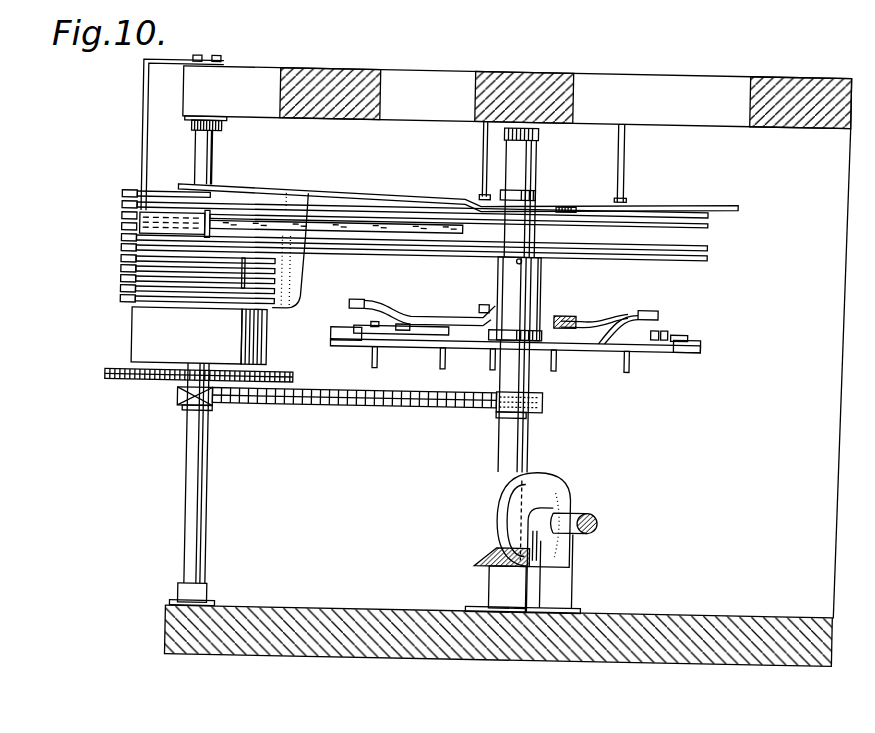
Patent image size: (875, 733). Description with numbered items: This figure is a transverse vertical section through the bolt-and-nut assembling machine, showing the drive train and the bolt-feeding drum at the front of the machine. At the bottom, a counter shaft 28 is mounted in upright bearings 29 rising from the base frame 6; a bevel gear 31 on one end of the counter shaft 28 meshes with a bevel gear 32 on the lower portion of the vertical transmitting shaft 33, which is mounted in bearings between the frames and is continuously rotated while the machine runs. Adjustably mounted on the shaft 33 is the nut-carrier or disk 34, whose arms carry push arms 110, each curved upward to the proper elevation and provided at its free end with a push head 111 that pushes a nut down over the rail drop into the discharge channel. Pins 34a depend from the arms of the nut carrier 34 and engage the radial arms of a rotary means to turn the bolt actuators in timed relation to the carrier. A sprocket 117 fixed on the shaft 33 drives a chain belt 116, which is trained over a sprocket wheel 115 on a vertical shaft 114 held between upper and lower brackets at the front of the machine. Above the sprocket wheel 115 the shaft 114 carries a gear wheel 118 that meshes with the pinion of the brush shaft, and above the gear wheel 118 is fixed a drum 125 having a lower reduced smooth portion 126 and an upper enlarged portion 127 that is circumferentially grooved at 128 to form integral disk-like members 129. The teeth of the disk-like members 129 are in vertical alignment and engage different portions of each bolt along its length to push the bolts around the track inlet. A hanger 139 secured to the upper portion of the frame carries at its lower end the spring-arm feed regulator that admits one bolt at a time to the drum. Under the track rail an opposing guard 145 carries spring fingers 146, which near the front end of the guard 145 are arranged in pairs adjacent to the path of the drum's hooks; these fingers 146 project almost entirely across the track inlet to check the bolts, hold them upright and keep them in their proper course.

The base 6 is at (678, 621).
The counter shaft 28 is at (583, 517).
The upright bearings 29 is at (565, 568).
The bevel gear 31 is at (548, 489).
The bevel gear 32 is at (484, 558).
The vertical transmitting shaft 33 is at (503, 457).
The nut-carrier or disk 34 is at (553, 362).
The pins 34a is at (375, 360).
The push arm 110 is at (384, 308).
The push head 111 is at (358, 298).
The vertical shaft 114 is at (201, 490).
The sprocket wheel 115 is at (181, 399).
The chain belt 116 is at (373, 399).
The sprocket 117 is at (540, 410).
The gear wheel 118 is at (121, 377).
The drum 125 is at (131, 331).
The lower reduced smooth portion 126 is at (199, 336).
The upper enlarged portion 127 is at (121, 278).
The grooves 128 is at (123, 240).
The disk-like members 129 is at (120, 290).
The hanger 139 is at (143, 155).
The opposing guard 145 is at (306, 270).
The spring fingers 146 is at (228, 262).